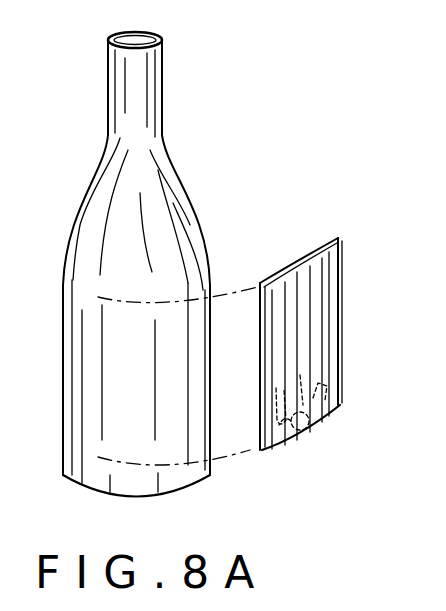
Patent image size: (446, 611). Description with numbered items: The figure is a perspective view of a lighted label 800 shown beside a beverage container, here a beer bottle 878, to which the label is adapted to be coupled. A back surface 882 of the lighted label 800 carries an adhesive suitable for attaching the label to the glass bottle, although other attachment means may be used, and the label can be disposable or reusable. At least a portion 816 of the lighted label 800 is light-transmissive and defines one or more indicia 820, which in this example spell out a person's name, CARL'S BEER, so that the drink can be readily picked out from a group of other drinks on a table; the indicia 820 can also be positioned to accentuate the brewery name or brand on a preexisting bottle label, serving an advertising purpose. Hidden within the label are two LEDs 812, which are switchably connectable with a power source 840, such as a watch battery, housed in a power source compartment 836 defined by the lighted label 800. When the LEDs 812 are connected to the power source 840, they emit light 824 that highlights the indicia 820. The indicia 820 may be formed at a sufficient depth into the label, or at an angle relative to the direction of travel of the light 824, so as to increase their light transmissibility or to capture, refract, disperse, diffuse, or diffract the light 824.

The beer bottle 878 is at (97, 176).
The lighted label 800 is at (350, 257).
The back surface 882 is at (298, 268).
The indicia 820 is at (337, 288).
The light-transmissive portion 816 is at (305, 342).
The LEDs 812 is at (340, 380).
The power source compartment 836 is at (296, 432).
The power source 840 is at (308, 430).
The light 824 is at (262, 410).